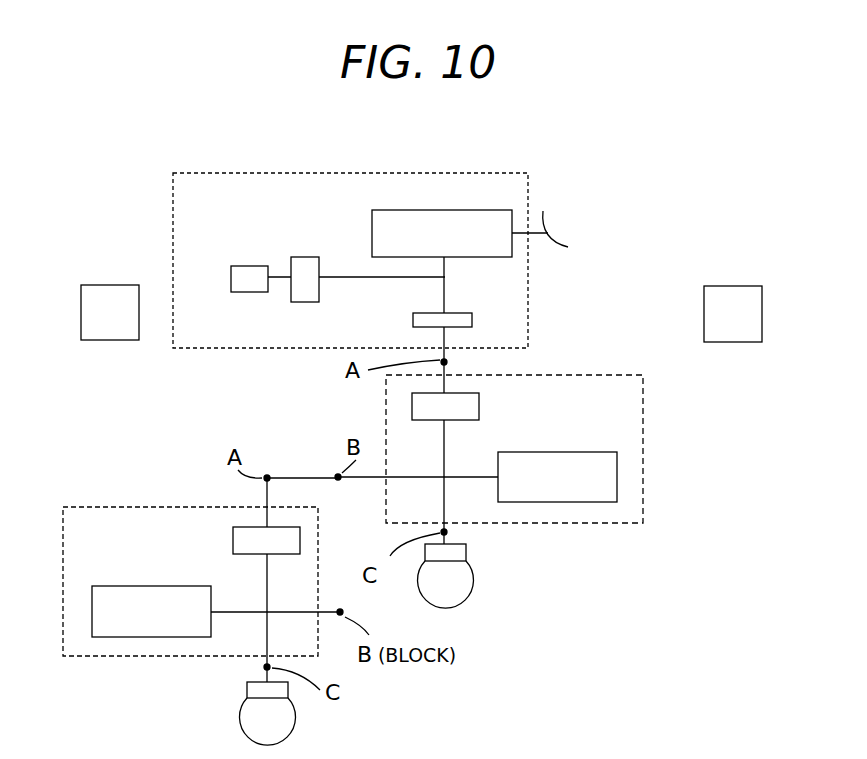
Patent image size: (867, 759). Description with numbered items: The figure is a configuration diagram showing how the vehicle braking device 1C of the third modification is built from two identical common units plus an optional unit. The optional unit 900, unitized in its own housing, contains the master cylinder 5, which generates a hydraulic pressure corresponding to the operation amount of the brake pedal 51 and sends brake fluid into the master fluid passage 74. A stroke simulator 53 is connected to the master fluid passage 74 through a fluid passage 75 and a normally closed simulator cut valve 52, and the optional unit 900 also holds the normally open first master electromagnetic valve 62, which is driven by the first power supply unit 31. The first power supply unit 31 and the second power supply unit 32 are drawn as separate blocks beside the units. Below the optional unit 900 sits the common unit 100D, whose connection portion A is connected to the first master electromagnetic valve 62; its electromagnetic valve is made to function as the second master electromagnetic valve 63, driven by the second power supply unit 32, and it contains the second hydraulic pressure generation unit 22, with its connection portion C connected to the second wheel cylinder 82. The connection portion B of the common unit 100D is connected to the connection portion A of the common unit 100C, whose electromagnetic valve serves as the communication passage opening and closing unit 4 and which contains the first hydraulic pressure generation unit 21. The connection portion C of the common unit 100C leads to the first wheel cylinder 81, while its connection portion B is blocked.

The vehicle braking device 1C is at (108, 133).
The optional unit 900 is at (287, 160).
The master cylinder 5 is at (445, 218).
The brake pedal 51 is at (545, 223).
The simulator cut valve 52 is at (320, 267).
The stroke simulator 53 is at (229, 279).
The master fluid passage 74 is at (446, 288).
The fluid passage 75 is at (398, 283).
The first master electromagnetic valve 62 is at (455, 316).
The second master electromagnetic valve 63 is at (420, 406).
The first power supply unit 31 is at (105, 292).
The second power supply unit 32 is at (747, 300).
The common unit 100C is at (101, 492).
The common unit 100D is at (652, 450).
The communication passage opening and closing unit 4 is at (232, 540).
The first hydraulic pressure generation unit 21 is at (133, 630).
The second hydraulic pressure generation unit 22 is at (568, 490).
The first wheel cylinder 81 is at (250, 697).
The second wheel cylinder 82 is at (455, 553).